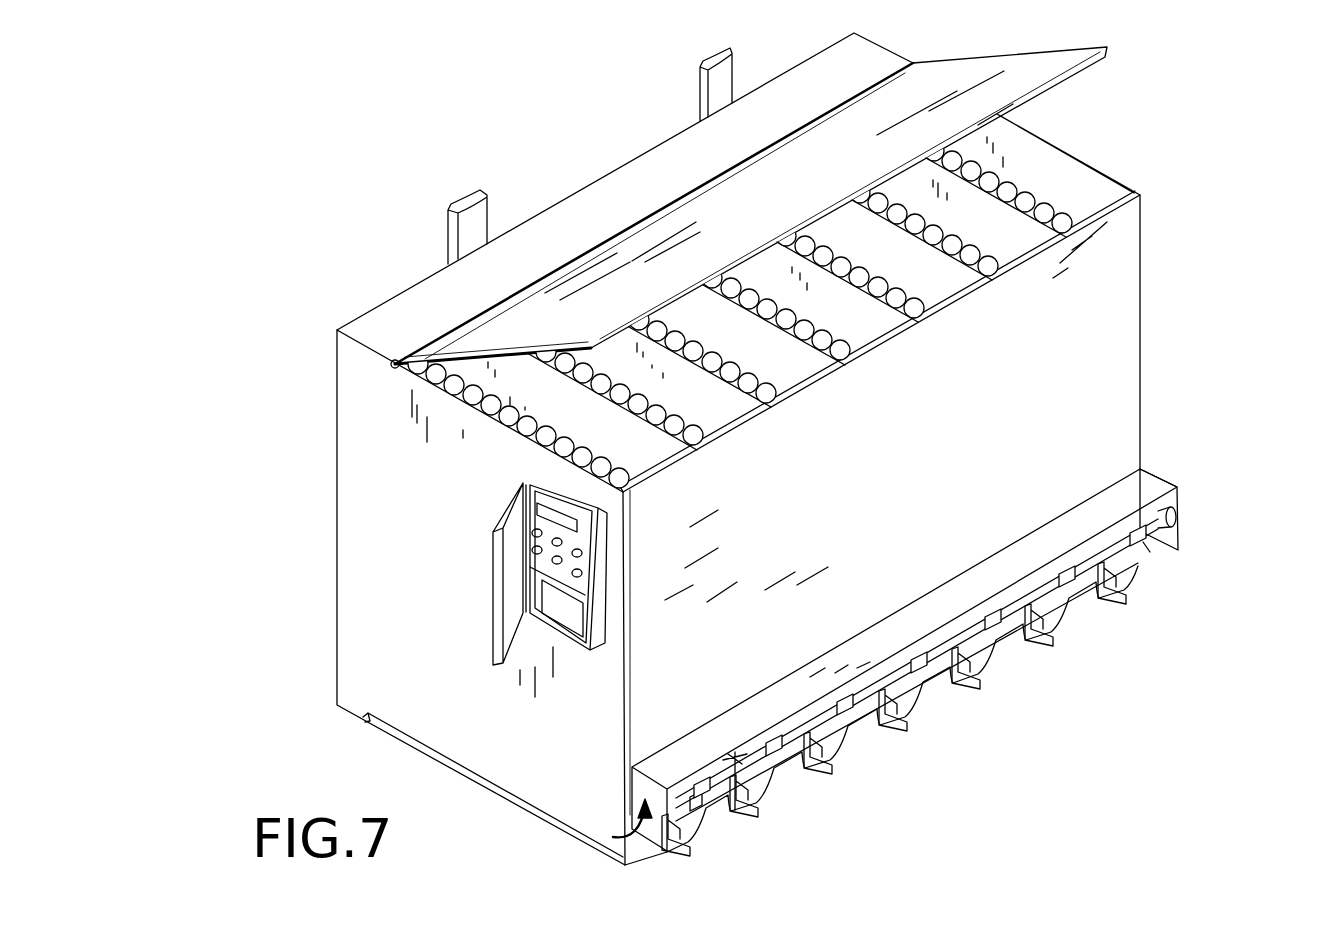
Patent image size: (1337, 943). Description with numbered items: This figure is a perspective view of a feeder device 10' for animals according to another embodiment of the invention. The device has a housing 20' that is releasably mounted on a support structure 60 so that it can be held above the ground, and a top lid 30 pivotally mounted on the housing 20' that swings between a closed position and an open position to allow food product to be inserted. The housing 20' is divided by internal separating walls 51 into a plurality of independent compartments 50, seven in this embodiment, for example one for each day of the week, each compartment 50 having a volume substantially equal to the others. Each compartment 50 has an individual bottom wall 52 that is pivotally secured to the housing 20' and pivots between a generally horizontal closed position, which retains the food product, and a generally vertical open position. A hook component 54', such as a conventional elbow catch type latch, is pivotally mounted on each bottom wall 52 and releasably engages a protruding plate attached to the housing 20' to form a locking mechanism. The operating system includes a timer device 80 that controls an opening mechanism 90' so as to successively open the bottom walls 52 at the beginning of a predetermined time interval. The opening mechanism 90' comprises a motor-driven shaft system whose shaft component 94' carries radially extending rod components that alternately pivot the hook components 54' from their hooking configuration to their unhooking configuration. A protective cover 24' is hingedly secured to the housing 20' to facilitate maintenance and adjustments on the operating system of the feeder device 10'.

The feeder device 10' is at (819, 449).
The housing 20' is at (783, 489).
The protective cover 24' is at (1203, 500).
The top lid 30 is at (1088, 70).
The compartments 50 is at (960, 212).
The internal separating walls 51 is at (1006, 236).
The bottom wall 52 is at (811, 773).
The hook component 54' is at (940, 709).
The support structure 60 is at (448, 245).
The timer device 80 is at (582, 588).
The opening mechanism 90' is at (881, 658).
The shaft component 94' is at (926, 643).